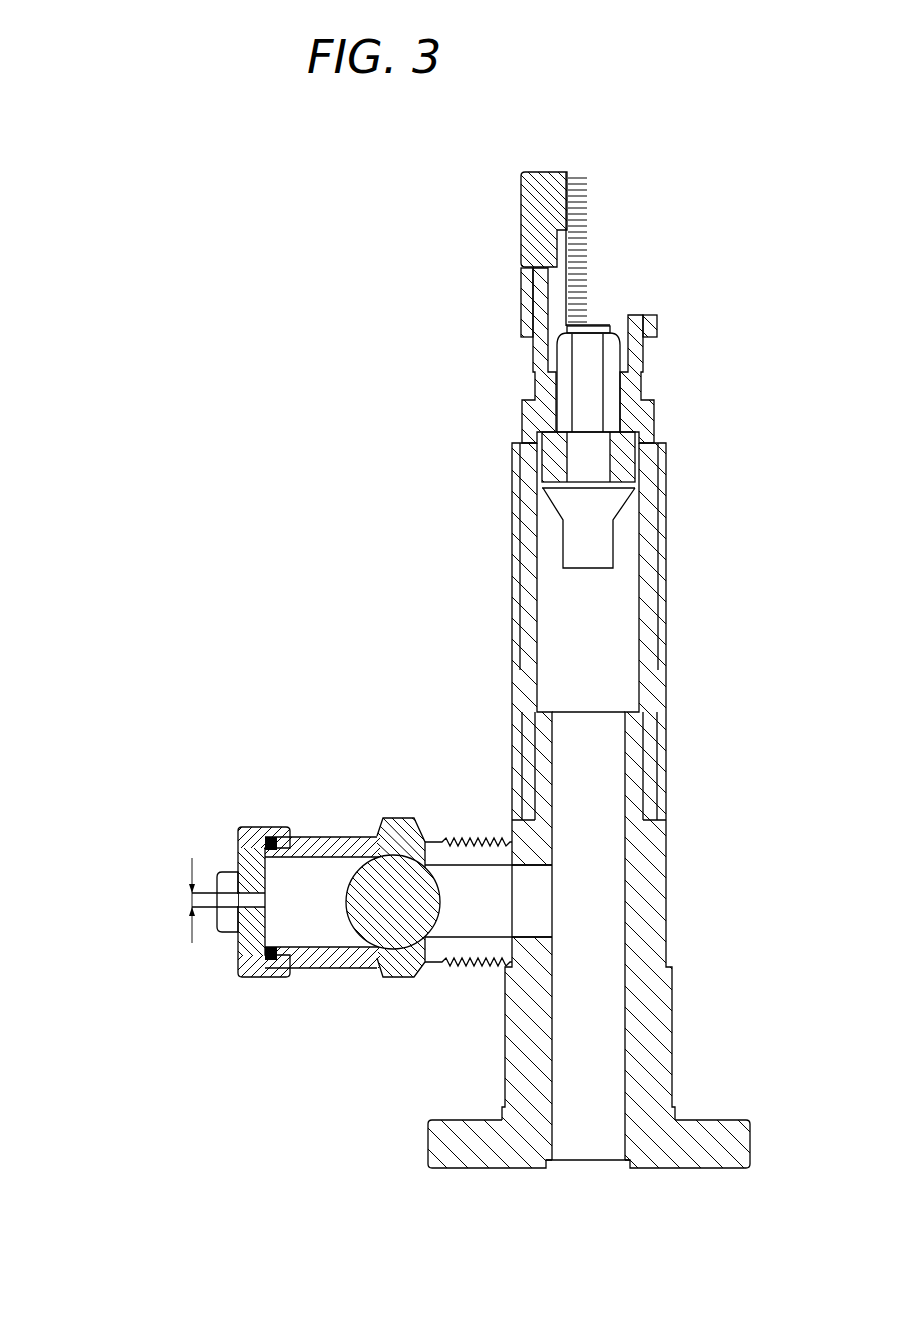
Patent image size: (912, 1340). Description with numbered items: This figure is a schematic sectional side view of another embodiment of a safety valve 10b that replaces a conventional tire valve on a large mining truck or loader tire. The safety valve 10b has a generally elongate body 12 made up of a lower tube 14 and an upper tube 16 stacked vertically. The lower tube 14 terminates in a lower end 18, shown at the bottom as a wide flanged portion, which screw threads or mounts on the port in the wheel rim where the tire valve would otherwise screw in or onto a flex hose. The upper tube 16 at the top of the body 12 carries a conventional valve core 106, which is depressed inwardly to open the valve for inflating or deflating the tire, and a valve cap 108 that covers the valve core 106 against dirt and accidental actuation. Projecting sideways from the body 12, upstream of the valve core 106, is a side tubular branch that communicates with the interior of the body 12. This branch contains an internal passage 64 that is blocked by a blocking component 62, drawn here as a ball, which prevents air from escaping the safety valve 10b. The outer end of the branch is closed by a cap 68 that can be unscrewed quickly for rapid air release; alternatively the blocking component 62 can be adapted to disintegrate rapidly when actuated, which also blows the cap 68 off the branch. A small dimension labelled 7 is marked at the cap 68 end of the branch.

The safety valve 10b is at (200, 158).
The elongate body 12 is at (645, 931).
The lower tube 14 is at (445, 1154).
The upper tube 16 is at (548, 388).
The lower end 18 is at (615, 1140).
The blocking component 62 is at (378, 888).
The internal passage 64 is at (323, 912).
The cap 68 is at (268, 835).
The gap dimension 7 is at (181, 900).
The valve core 106 is at (588, 390).
The valve cap 108 is at (535, 195).